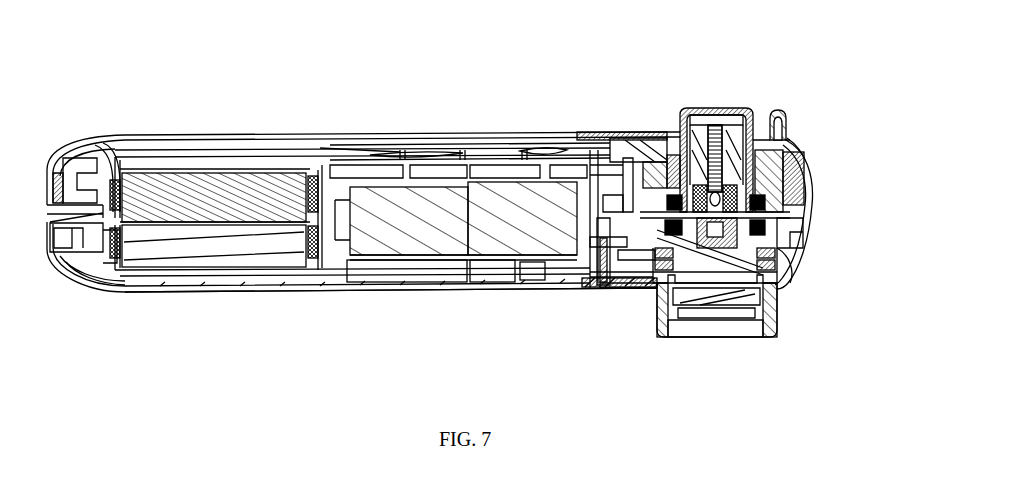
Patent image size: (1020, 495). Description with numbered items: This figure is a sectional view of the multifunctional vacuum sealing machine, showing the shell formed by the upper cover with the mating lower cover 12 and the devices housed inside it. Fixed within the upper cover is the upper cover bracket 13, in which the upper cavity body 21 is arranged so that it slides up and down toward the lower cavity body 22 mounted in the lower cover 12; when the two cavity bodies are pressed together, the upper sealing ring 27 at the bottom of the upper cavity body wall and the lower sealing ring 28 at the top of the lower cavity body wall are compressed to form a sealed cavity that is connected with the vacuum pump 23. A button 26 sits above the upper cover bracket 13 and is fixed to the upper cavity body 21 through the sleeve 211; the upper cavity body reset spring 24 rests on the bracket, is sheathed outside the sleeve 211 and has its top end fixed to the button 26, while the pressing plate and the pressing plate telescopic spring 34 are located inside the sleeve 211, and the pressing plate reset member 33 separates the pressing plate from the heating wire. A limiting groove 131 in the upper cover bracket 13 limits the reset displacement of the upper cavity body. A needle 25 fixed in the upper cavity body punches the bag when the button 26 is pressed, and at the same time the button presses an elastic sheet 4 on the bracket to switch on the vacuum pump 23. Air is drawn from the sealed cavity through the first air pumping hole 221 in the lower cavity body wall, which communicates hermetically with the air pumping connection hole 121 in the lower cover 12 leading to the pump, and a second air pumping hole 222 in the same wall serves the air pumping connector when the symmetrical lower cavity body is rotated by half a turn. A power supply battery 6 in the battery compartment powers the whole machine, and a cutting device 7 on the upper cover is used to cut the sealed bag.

The elastic sheet 4 is at (645, 145).
The power supply battery 6 is at (140, 267).
The cutting device 7 is at (790, 141).
The lower cover 12 is at (302, 283).
The upper cover bracket 13 is at (612, 175).
The upper cavity body 21 is at (797, 150).
The lower cavity body 22 is at (793, 248).
The vacuum pump 23 is at (412, 205).
The upper cavity body reset spring 24 is at (690, 135).
The needle 25 is at (777, 110).
The button 26 is at (710, 108).
The upper sealing ring 27 is at (808, 205).
The lower sealing ring 28 is at (800, 230).
The pressing plate reset member 33 is at (497, 160).
The pressing plate telescopic spring 34 is at (720, 130).
The air pumping connection hole 121 is at (613, 295).
The limiting groove 131 is at (805, 176).
The sleeve 211 is at (676, 140).
The first air pumping hole 221 is at (773, 267).
The second air pumping hole 222 is at (660, 300).